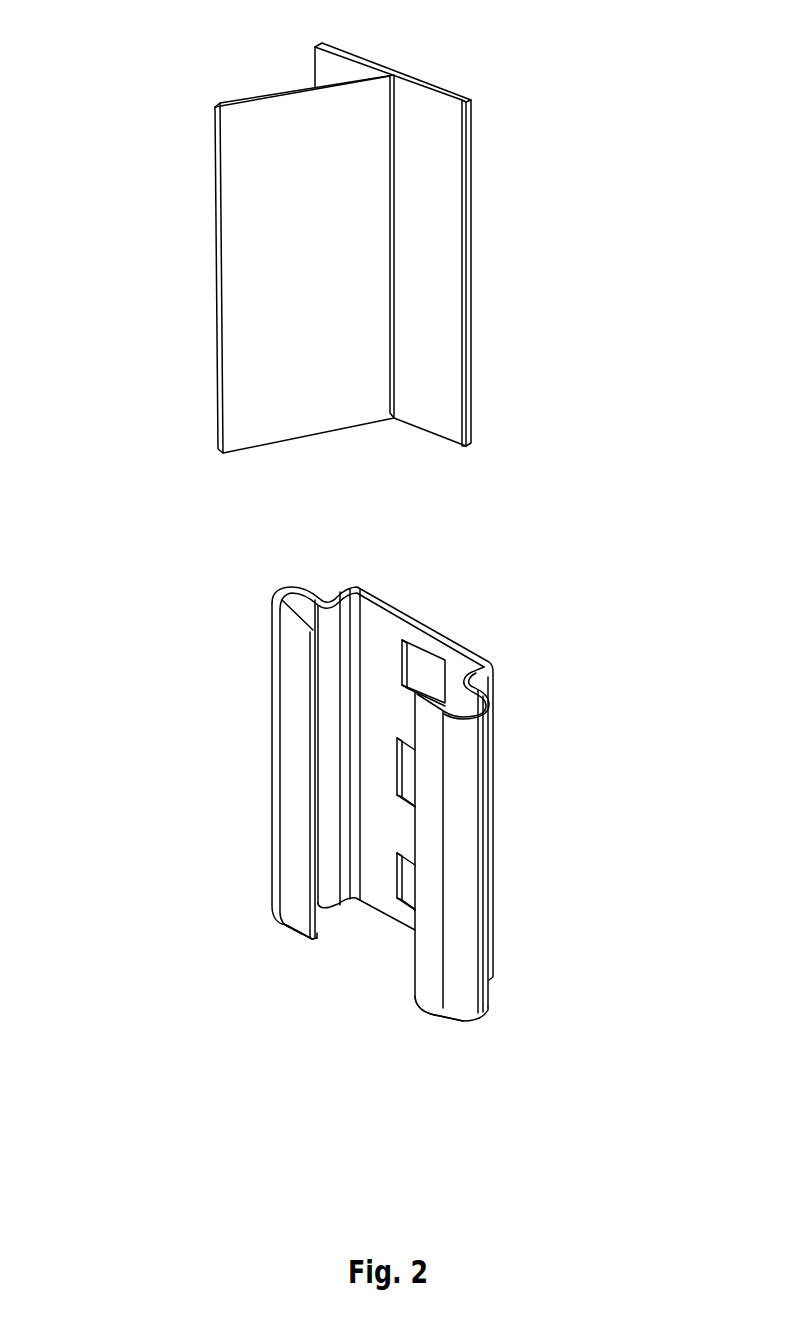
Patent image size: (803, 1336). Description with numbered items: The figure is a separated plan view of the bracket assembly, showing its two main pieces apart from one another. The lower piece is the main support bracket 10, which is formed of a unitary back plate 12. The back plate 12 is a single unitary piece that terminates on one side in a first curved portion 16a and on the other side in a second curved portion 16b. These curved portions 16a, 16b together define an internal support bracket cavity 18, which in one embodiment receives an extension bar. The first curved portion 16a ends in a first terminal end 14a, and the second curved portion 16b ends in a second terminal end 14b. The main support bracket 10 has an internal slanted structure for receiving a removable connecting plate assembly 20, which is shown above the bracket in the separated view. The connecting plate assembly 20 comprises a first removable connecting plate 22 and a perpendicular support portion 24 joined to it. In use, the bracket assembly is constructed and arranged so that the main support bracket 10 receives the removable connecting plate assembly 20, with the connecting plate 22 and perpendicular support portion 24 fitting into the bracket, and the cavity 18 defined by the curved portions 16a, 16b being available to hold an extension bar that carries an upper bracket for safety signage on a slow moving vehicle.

The main support bracket 10 is at (475, 618).
The back plate 12 is at (400, 605).
The first terminal end 14a is at (305, 928).
The second terminal end 14b is at (415, 978).
The first curved portion 16a is at (292, 730).
The second curved portion 16b is at (462, 838).
The internal support bracket cavity 18 is at (372, 943).
The connecting plate assembly 20 is at (180, 188).
The first removable connecting plate 22 is at (433, 85).
The perpendicular support portion 24 is at (220, 390).